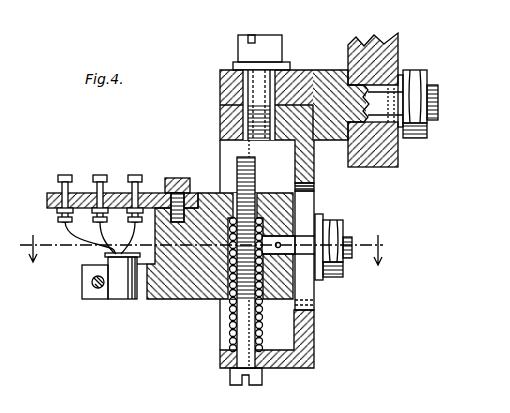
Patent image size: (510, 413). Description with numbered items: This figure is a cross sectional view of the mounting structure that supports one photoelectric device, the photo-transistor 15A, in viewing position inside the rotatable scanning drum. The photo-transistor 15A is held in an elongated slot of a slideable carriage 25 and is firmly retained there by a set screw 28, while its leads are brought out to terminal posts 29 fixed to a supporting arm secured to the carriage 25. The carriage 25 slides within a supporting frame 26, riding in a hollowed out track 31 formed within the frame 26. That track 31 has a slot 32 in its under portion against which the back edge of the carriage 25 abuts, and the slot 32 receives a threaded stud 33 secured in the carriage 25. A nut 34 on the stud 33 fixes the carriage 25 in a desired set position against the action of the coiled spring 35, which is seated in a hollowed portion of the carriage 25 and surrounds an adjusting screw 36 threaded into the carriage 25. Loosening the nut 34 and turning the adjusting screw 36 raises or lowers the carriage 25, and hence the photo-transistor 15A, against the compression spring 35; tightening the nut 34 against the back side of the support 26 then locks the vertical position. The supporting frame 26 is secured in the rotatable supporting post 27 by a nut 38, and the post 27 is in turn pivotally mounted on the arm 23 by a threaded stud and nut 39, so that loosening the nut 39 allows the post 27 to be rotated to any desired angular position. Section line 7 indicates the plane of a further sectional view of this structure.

The section line 7- 7 is at (201, 242).
The photo-transistor 15A is at (122, 298).
The arm 23 is at (396, 47).
The slideable carriage 25 is at (181, 298).
The supporting frame 26 is at (316, 338).
The rotatable supporting post 27 is at (318, 74).
The set screw 28 is at (91, 281).
The terminal post 29 is at (130, 180).
The hollowed out track 31 is at (233, 142).
The slot 32 is at (309, 187).
The threaded stud 33 is at (347, 230).
The nut 34 is at (338, 273).
The coiled spring 35 is at (261, 322).
The adjusting screw 36 is at (233, 373).
The nut 38 is at (240, 50).
The threaded stud and nut 39 is at (428, 84).